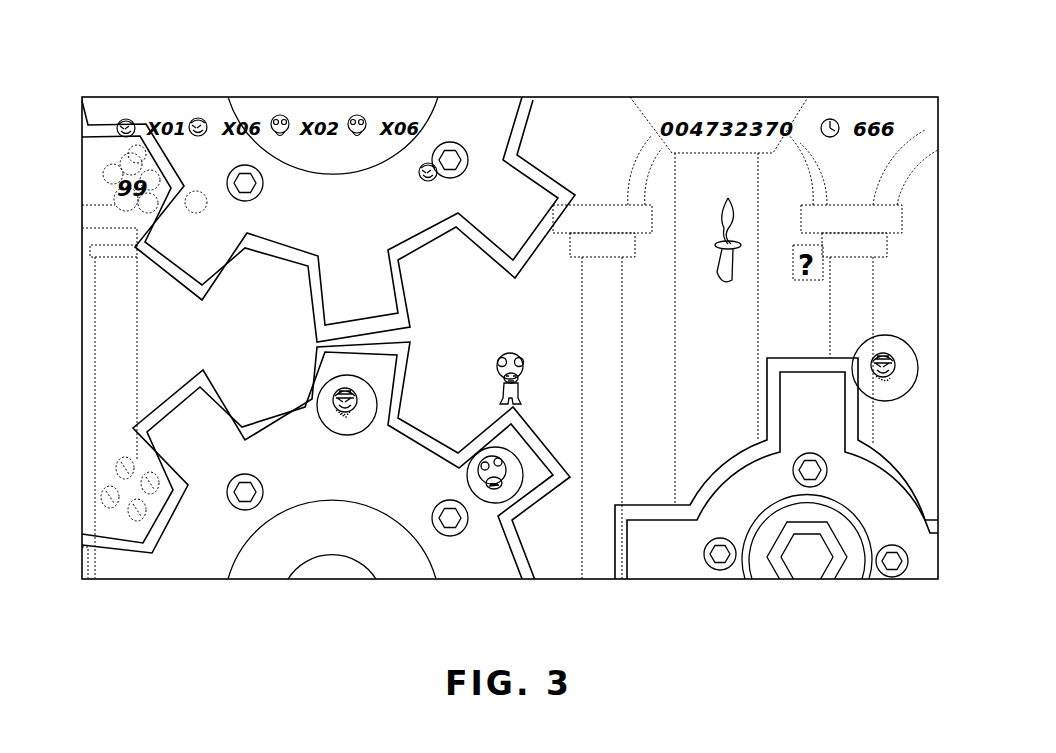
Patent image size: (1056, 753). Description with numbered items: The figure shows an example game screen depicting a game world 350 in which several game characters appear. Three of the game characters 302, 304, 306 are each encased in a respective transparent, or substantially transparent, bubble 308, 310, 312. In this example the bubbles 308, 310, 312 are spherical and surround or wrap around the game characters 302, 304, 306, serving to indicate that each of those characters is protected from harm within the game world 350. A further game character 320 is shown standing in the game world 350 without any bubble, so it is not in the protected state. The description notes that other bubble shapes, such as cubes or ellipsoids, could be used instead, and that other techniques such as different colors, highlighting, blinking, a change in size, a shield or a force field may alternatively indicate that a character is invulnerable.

The game world 350 is at (590, 120).
The game character 302 is at (338, 417).
The game character 304 is at (492, 503).
The game character 306 is at (897, 366).
The bubble 308 is at (368, 428).
The bubble 310 is at (523, 480).
The bubble 312 is at (892, 402).
The game character 320 is at (500, 353).